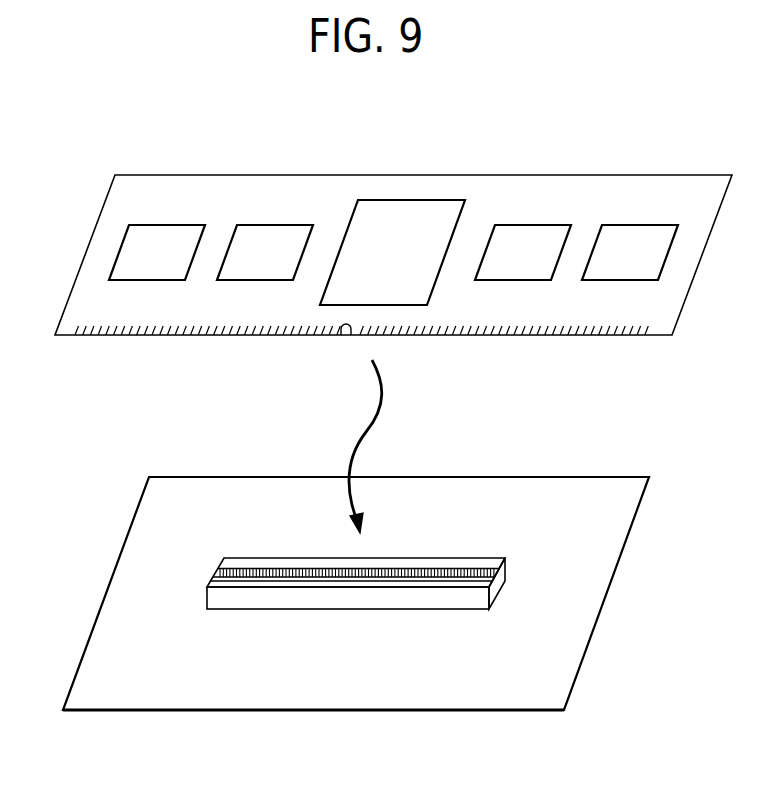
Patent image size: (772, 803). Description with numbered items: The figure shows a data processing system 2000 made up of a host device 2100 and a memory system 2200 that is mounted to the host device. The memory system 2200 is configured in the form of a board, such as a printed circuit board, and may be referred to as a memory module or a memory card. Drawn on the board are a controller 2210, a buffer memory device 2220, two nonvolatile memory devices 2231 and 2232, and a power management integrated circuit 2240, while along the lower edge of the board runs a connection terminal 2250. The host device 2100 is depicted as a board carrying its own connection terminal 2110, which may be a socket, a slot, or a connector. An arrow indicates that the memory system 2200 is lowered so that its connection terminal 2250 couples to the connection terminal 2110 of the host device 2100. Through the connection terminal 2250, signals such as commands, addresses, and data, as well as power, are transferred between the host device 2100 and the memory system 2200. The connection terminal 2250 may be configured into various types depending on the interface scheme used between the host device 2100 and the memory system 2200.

The data processing system 2000 is at (62, 138).
The host device 2100 is at (356, 593).
The connection terminal 2110 is at (507, 564).
The memory system 2200 is at (393, 255).
The controller 2210 is at (392, 252).
The buffer memory device 2220 is at (265, 252).
The nonvolatile memory device 2231 is at (523, 252).
The nonvolatile memory device 2232 is at (630, 252).
The power management integrated circuit 2240 is at (157, 252).
The connection terminal 2250 is at (93, 338).